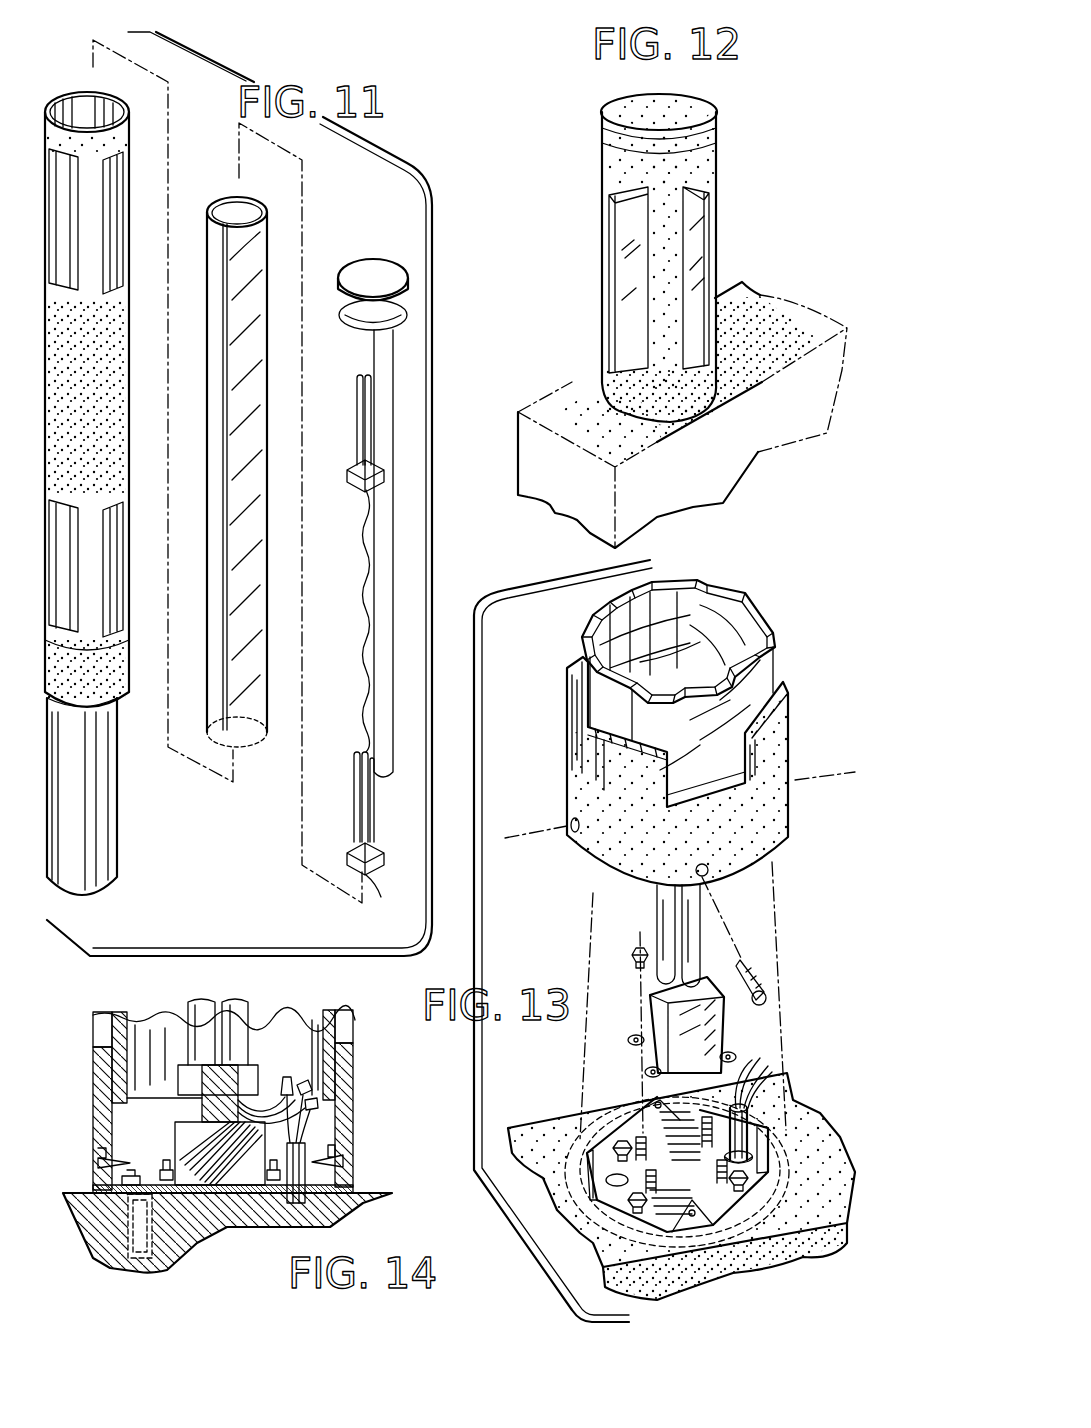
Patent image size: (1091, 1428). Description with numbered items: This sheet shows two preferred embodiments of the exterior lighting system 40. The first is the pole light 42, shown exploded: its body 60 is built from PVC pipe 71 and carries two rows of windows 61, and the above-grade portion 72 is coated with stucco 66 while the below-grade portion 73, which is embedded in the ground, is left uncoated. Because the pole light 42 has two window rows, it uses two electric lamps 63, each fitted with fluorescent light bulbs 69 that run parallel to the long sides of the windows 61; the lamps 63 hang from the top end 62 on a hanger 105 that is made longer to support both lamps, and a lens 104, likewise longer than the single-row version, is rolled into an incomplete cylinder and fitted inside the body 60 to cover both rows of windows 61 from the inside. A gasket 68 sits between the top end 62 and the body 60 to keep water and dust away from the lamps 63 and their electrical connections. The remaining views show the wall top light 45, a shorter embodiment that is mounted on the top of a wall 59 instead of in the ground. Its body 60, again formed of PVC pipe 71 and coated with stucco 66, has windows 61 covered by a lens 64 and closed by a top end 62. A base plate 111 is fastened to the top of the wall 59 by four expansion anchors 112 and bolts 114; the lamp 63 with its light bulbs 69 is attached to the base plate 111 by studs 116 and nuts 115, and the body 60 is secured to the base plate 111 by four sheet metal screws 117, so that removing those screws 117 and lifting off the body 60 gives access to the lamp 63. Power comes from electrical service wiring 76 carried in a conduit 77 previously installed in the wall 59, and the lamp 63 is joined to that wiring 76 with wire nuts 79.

In FIG. 11, the exterior lighting system 40 is at (333, 69).
In FIG. 12, the exterior lighting system 40 is at (561, 102).
In FIG. 11, the pole light 42 is at (265, 61).
In FIG. 12, the wall top light 45 is at (574, 128).
In FIG. 13, the wall top light 45 is at (568, 648).
In FIG. 14, the wall top light 45 is at (163, 1002).
In FIG. 12, the wall 59 is at (527, 394).
In FIG. 13, the wall 59 is at (528, 1132).
In FIG. 14, the wall 59 is at (345, 1197).
In FIG. 11, the body 60 is at (131, 392).
In FIG. 12, the body 60 is at (716, 145).
In FIG. 11, the windows 61 is at (121, 283).
In FIG. 12, the windows 61 is at (707, 221).
In FIG. 11, the top end 62 is at (340, 262).
In FIG. 12, the top end 62 is at (709, 102).
In FIG. 11, the electric lamp 63 is at (350, 472).
In FIG. 13, the electric lamp 63 is at (682, 1027).
In FIG. 14, the electric lamp 63 is at (187, 1135).
In FIG. 12, the lens 64 is at (697, 284).
In FIG. 13, the lens 64 is at (731, 590).
In FIG. 14, the lens 64 is at (332, 1010).
In FIG. 12, the stucco 66 is at (609, 156).
In FIG. 13, the stucco 66 is at (792, 823).
In FIG. 11, the gasket 68 is at (342, 318).
In FIG. 11, the light bulbs 69 is at (357, 395).
In FIG. 13, the light bulbs 69 is at (665, 910).
In FIG. 14, the light bulbs 69 is at (243, 1000).
In FIG. 11, the PVC pipe 71 is at (118, 806).
In FIG. 13, the PVC pipe 71 is at (792, 680).
In FIG. 14, the PVC pipe 71 is at (353, 1050).
In FIG. 11, the above-grade portion 72 is at (123, 656).
In FIG. 11, the below-grade portion 73 is at (116, 782).
In FIG. 13, the electrical service wiring 76 is at (765, 1068).
In FIG. 13, the conduit 77 is at (750, 1108).
In FIG. 14, the conduit 77 is at (296, 1173).
In FIG. 14, the wire nuts 79 is at (353, 1107).
In FIG. 11, the lens 104 is at (233, 747).
In FIG. 11, the hanger 105 is at (364, 573).
In FIG. 13, the base plate 111 is at (618, 1142).
In FIG. 14, the base plate 111 is at (227, 1197).
In FIG. 14, the expansion anchors 112 is at (173, 1270).
In FIG. 13, the bolts 114 is at (613, 1142).
In FIG. 14, the bolts 114 is at (128, 1180).
In FIG. 13, the nuts 115 is at (638, 967).
In FIG. 14, the nuts 115 is at (160, 1163).
In FIG. 13, the studs 116 is at (711, 1113).
In FIG. 14, the studs 116 is at (93, 1105).
In FIG. 13, the sheet metal screws 117 is at (760, 980).
In FIG. 14, the sheet metal screws 117 is at (352, 1162).